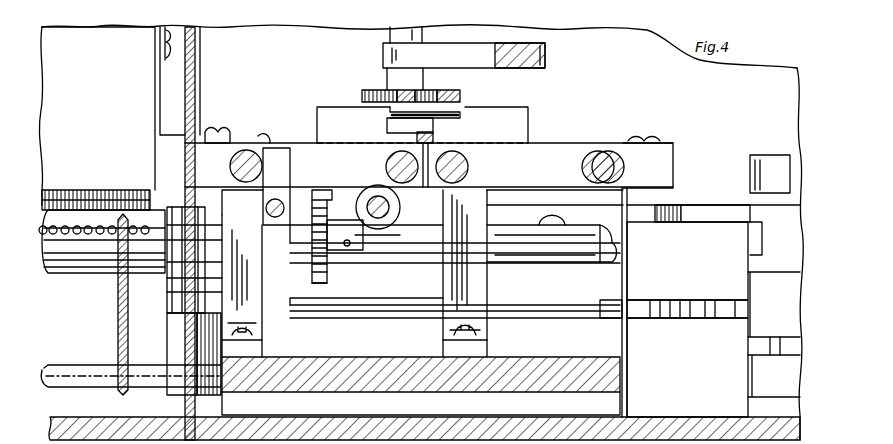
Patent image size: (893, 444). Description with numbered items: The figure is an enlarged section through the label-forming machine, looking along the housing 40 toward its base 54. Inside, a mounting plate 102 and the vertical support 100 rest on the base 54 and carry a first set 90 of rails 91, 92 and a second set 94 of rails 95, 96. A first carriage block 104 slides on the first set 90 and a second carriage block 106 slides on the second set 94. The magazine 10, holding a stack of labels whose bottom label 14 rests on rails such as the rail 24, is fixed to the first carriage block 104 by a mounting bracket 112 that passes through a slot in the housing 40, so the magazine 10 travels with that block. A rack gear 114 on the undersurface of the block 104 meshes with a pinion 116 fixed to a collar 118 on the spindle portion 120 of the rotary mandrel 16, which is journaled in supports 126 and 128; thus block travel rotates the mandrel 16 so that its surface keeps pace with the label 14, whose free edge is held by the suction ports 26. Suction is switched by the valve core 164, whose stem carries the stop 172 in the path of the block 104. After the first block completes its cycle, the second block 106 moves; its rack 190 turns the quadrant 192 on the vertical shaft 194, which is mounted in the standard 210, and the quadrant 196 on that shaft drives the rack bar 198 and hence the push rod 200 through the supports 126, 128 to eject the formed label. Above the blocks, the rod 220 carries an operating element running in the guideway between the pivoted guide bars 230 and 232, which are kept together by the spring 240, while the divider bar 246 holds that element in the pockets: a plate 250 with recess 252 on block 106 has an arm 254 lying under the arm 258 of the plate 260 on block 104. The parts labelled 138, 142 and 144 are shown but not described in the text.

The magazine 10 is at (62, 42).
The label 14 is at (96, 207).
The rotary mandrel 16 is at (87, 270).
The rail 24 is at (129, 340).
The suction ports 26 is at (65, 234).
The housing 40 is at (192, 40).
The base 54 is at (690, 430).
The first set of rails 90 is at (262, 143).
The rail 91 is at (230, 166).
The rail 92 is at (386, 167).
The second set of rails 94 is at (607, 160).
The rail 95 is at (582, 170).
The rail 96 is at (468, 170).
The vertical support 100 is at (615, 276).
The mounting plate 102 is at (620, 374).
The first carriage block 104 is at (290, 148).
The second carriage block 106 is at (662, 175).
The mounting bracket 112 is at (160, 112).
The rack gear 114 is at (318, 197).
The pinion 116 is at (328, 275).
The collar 118 is at (362, 250).
The spindle portion 120 is at (422, 256).
The support 126 is at (485, 283).
The support 128 is at (258, 278).
The bracket 138 is at (263, 222).
The arm 142 is at (285, 170).
The pin 144 is at (265, 207).
The valve core 164 is at (390, 206).
The second stop 172 is at (392, 228).
The rack 190 is at (658, 210).
The quadrant 192 is at (695, 222).
The shaft 194 is at (768, 348).
The quadrant 196 is at (662, 318).
The rack bar 198 is at (608, 315).
The push rod 200 is at (373, 305).
The standard 210 is at (756, 265).
The rod 220 is at (545, 60).
The guide bar 230 is at (452, 95).
The guide bar 232 is at (395, 94).
The spring 240 is at (428, 90).
The divider bar 246 is at (435, 138).
The plate 250 is at (525, 110).
The recess 252 is at (460, 115).
The arm 254 is at (387, 126).
The arm 258 is at (428, 100).
The plate 260 is at (330, 110).